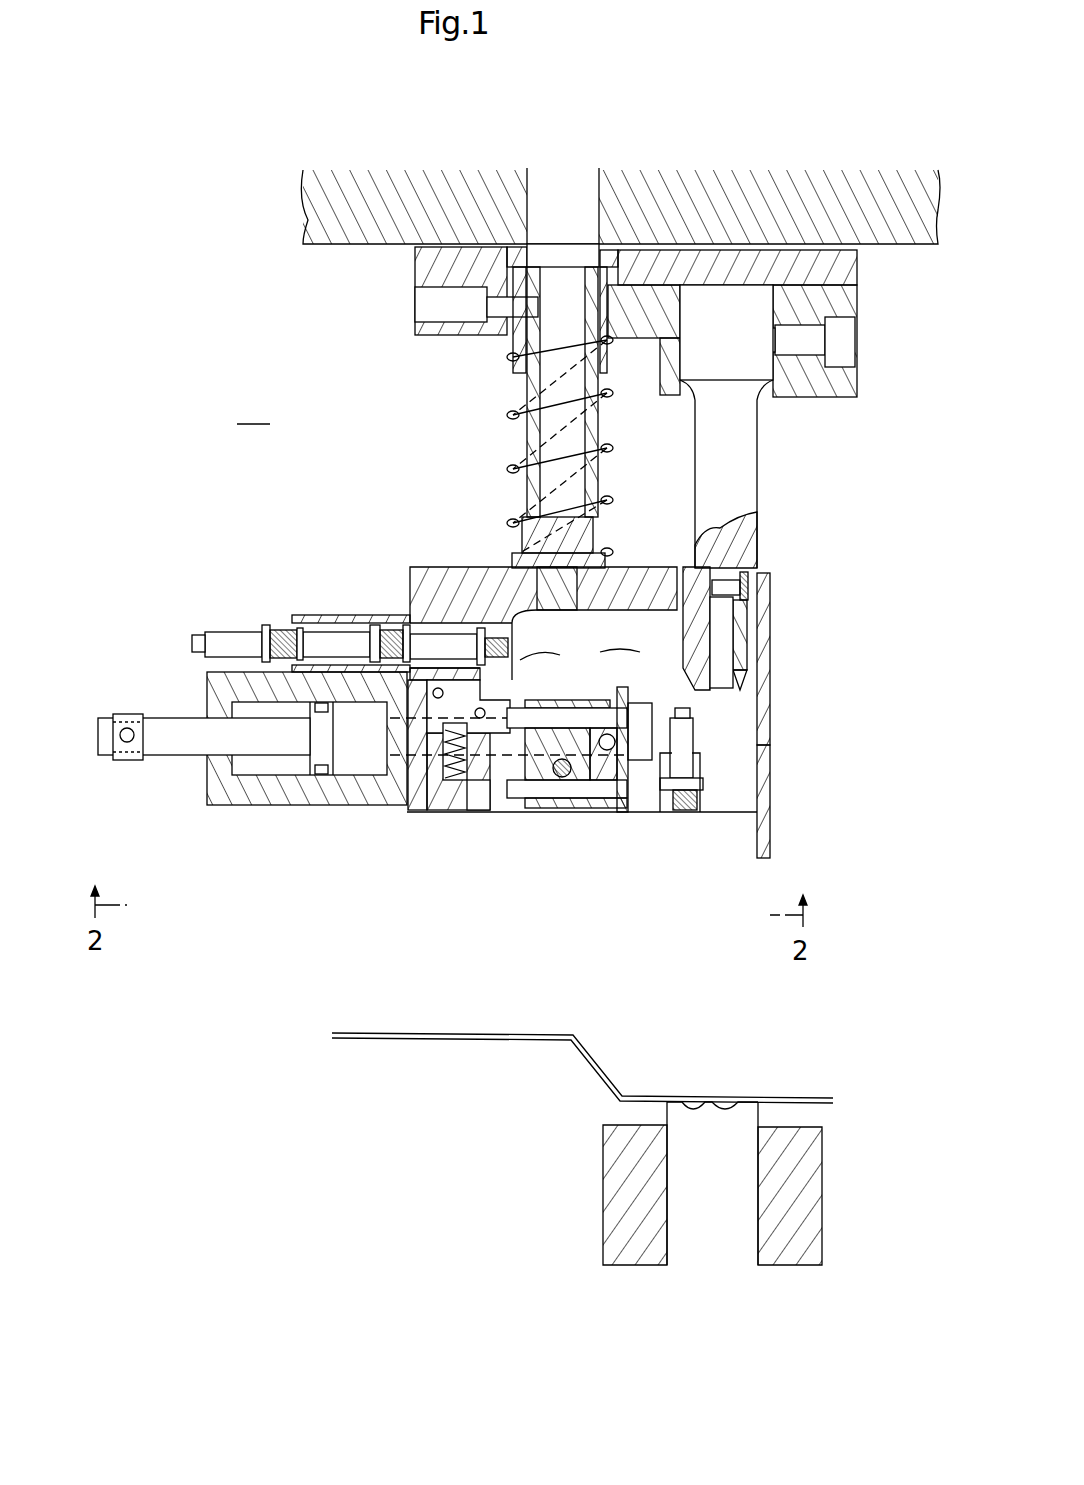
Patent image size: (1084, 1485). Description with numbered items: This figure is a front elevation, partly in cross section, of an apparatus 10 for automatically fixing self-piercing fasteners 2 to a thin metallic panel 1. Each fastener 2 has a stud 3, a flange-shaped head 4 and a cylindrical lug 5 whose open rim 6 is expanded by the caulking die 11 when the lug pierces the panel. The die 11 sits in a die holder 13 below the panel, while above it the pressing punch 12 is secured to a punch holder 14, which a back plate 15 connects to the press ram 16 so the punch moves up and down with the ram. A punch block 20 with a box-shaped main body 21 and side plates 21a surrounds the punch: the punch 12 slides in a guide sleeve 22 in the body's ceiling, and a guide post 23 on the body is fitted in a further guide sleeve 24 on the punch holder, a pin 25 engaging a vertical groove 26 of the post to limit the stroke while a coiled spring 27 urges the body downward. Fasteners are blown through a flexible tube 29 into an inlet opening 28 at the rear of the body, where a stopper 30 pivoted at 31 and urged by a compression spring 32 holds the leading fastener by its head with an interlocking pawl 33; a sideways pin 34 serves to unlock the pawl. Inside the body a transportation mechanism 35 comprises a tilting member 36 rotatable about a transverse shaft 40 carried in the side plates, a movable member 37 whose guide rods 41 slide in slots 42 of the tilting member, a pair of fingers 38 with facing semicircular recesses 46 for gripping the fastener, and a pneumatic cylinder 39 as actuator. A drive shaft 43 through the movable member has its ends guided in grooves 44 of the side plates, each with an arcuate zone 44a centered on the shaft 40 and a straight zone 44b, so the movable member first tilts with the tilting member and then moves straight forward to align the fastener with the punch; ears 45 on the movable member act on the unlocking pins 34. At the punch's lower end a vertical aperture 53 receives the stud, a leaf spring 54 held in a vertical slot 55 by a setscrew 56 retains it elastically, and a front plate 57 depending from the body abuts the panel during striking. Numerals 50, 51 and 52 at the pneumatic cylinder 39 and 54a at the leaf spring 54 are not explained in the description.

The metallic panel 1 is at (432, 1035).
The self-piercing fastener 2 is at (220, 628).
The stud 3 is at (197, 638).
The flange-shaped head 4 is at (265, 627).
The cylindrical lug 5 is at (285, 628).
The open rim 6 is at (300, 627).
The apparatus 10 is at (253, 409).
The caulking die 11 is at (790, 1190).
The pressing punch 12 is at (762, 487).
The die holder 13 is at (603, 1185).
The punch holder 14 is at (805, 398).
The back plate 15 is at (413, 262).
The press ram 16 is at (318, 248).
The punch block 20 is at (425, 562).
The main body 21 is at (478, 567).
The side plates 21a is at (745, 812).
The guide sleeve 22 is at (677, 605).
The guide post 23 is at (600, 465).
The further guide sleeve 24 is at (513, 350).
The pin 25 is at (503, 297).
The vertical groove 26 is at (513, 383).
The coiled spring 27 is at (505, 470).
The inlet opening 28 is at (438, 630).
The flexible tube 29 is at (345, 615).
The stopper 30 is at (495, 690).
The pivot 31 is at (400, 760).
The compression spring 32 is at (450, 790).
The interlocking pawl 33 is at (517, 636).
The unlocking pin 34 is at (470, 795).
The transportation mechanism 35 is at (503, 822).
The tilting member 36 is at (562, 800).
The movable member 37 is at (600, 810).
The fingers 38 is at (648, 812).
The pneumatic cylinder 39 is at (268, 805).
The transverse shaft 40 is at (590, 795).
The guide rods 41 is at (520, 735).
The slots 42 is at (540, 805).
The drive shaft 43 is at (637, 750).
The guide grooves 44 is at (660, 640).
The arcuate zone 44a is at (554, 653).
The straight zone 44b is at (620, 653).
The ears 45 is at (637, 684).
The recesses 46 is at (685, 812).
The piston rod 50 is at (182, 758).
The rod end fitting 51 is at (125, 762).
The piston 52 is at (335, 806).
The vertical aperture 53 is at (770, 700).
The leaf spring 54 is at (750, 630).
The stopper tip 54a is at (745, 648).
The vertical slot 55 is at (730, 668).
The setscrew 56 is at (748, 580).
The front plate 57 is at (772, 820).